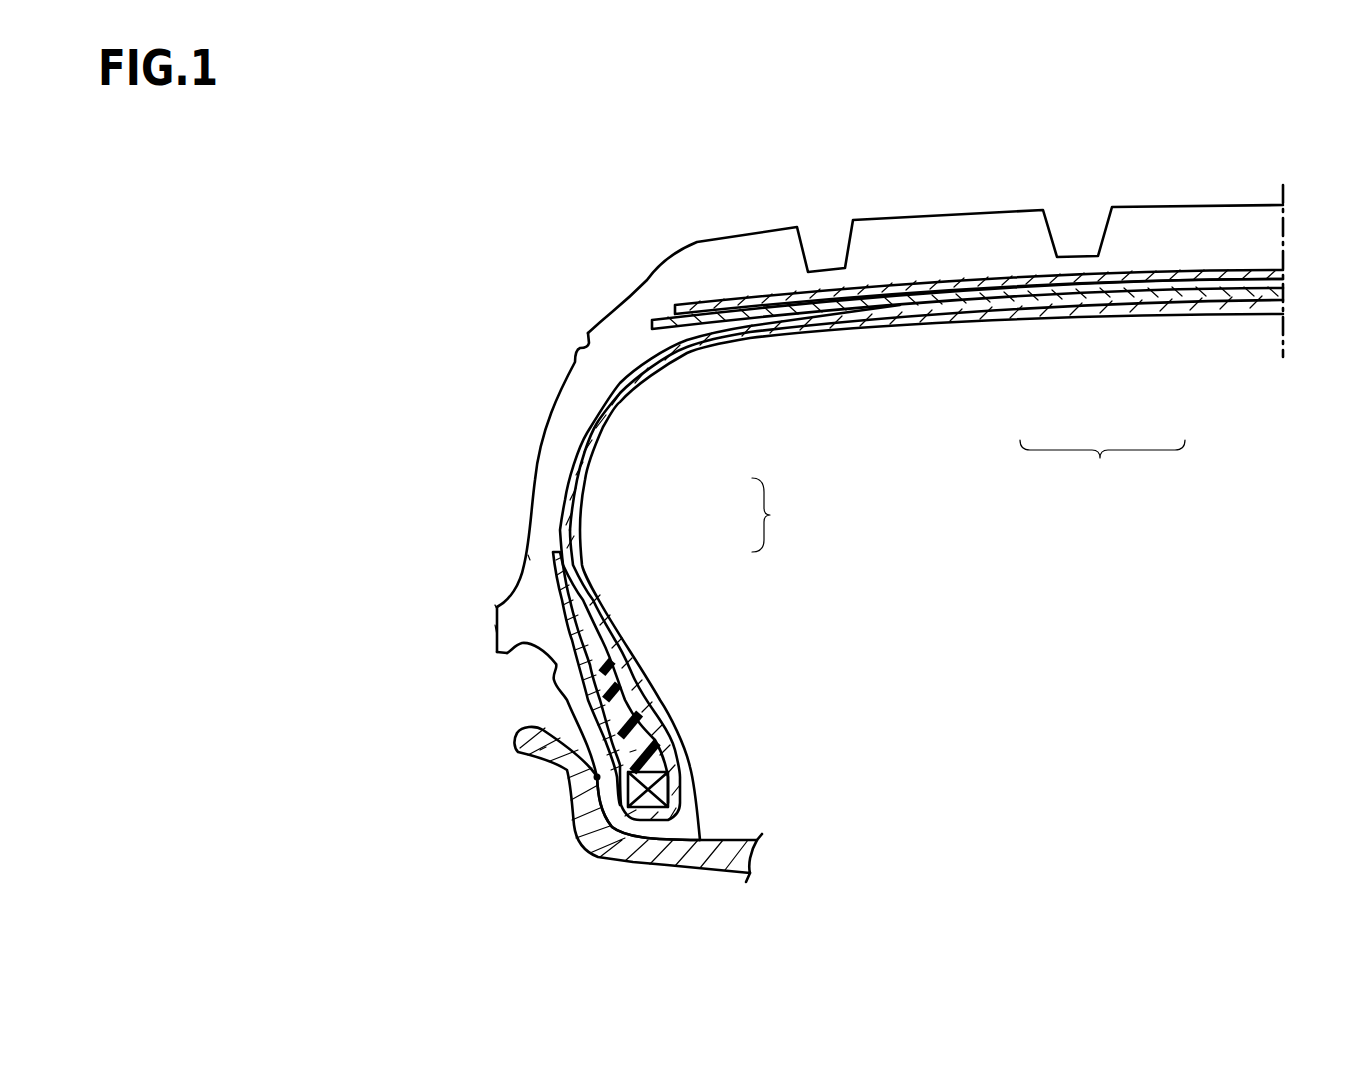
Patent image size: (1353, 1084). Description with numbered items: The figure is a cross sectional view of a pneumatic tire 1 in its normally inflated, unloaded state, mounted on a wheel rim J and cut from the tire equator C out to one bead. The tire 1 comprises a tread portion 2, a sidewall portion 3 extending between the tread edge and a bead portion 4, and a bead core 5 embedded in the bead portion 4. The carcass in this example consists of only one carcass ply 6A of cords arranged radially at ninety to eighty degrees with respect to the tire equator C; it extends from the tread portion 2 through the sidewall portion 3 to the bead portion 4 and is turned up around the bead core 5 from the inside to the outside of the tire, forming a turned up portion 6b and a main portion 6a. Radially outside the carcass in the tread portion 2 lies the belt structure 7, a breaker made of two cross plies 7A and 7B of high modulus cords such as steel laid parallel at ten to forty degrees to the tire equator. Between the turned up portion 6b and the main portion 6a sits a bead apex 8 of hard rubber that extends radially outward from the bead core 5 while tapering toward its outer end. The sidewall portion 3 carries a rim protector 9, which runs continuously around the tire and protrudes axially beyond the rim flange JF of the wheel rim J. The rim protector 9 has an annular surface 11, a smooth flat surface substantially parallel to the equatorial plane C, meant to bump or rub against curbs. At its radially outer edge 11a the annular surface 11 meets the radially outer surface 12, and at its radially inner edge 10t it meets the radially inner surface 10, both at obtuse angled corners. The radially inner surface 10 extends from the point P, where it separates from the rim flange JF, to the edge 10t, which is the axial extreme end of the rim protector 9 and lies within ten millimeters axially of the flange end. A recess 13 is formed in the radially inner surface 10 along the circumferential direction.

The pneumatic tire 1 is at (612, 272).
The tread portion 2 is at (962, 203).
The sidewall portion 3 is at (520, 446).
The bead portion 4 is at (680, 666).
The bead core 5 is at (663, 792).
The carcass ply 6A is at (802, 515).
The main portion 6a is at (587, 428).
The turned up portion 6b is at (578, 620).
The belt structure 7 is at (1102, 462).
The breaker ply 7A is at (1030, 293).
The breaker ply 7B is at (1120, 275).
The bead apex 8 is at (633, 748).
The rim protector 9 is at (476, 631).
The radially inner surface 10 is at (552, 699).
The radially inner edge 10t is at (497, 652).
The annular surface 11 is at (493, 617).
The radially outer edge 11a is at (495, 607).
The radially outer surface 12 is at (518, 558).
The recess 13 is at (532, 657).
The tire equator C is at (1283, 255).
The wheel rim J is at (710, 880).
The rim flange JF is at (548, 747).
The separation point P is at (597, 778).